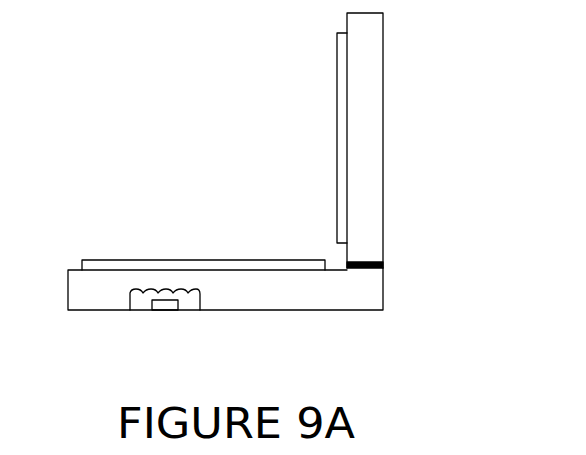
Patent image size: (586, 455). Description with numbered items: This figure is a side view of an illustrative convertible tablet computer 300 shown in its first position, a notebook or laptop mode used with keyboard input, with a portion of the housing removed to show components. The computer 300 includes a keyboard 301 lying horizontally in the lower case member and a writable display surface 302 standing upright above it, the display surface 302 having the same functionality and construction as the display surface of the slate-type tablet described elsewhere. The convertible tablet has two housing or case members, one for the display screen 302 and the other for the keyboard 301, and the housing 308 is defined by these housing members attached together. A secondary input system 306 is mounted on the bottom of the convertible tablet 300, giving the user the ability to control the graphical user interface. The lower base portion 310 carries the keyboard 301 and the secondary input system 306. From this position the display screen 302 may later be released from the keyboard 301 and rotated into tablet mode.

The convertible tablet computer 300 is at (420, 140).
The keyboard 301 is at (102, 267).
The writable display surface 302 is at (339, 119).
The secondary input system 306 is at (167, 310).
The housing 308 is at (375, 283).
The base housing 310 is at (332, 310).